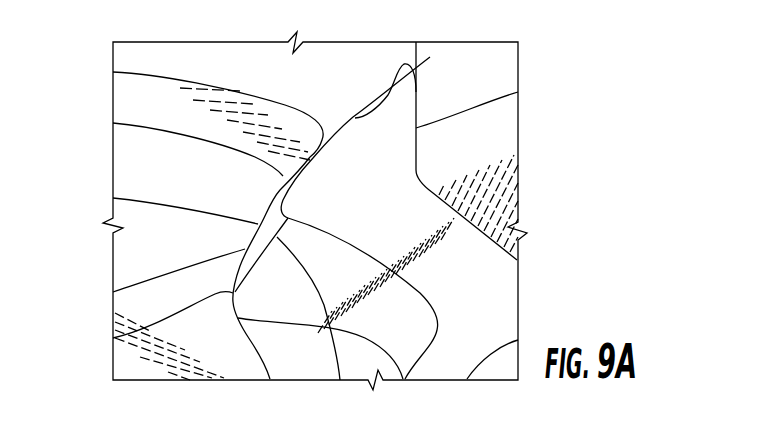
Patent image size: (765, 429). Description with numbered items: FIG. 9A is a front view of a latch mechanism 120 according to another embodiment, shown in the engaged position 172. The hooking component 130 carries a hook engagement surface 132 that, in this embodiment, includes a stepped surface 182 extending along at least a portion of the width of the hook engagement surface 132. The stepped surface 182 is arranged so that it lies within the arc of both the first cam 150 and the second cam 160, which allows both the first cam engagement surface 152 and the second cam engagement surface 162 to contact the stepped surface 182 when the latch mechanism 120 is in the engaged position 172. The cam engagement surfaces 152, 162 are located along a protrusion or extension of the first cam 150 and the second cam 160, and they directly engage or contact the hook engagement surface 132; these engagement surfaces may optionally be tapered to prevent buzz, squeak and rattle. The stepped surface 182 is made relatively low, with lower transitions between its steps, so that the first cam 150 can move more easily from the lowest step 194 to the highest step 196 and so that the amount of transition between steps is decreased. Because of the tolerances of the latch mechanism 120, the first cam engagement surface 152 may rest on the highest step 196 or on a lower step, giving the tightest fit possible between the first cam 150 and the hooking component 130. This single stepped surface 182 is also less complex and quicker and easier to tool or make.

The latch mechanism 120 is at (548, 203).
The hooking component 130 is at (170, 386).
The hook engagement surface 132 is at (113, 198).
The first cam 150 is at (524, 176).
The first cam engagement surface 152 is at (340, 380).
The second cam 160 is at (526, 309).
The second cam engagement surface 162 is at (430, 57).
The engaged position 172 is at (600, 131).
The stepped surface 182 is at (113, 292).
The lowest step 194 is at (113, 123).
The highest step 196 is at (113, 338).